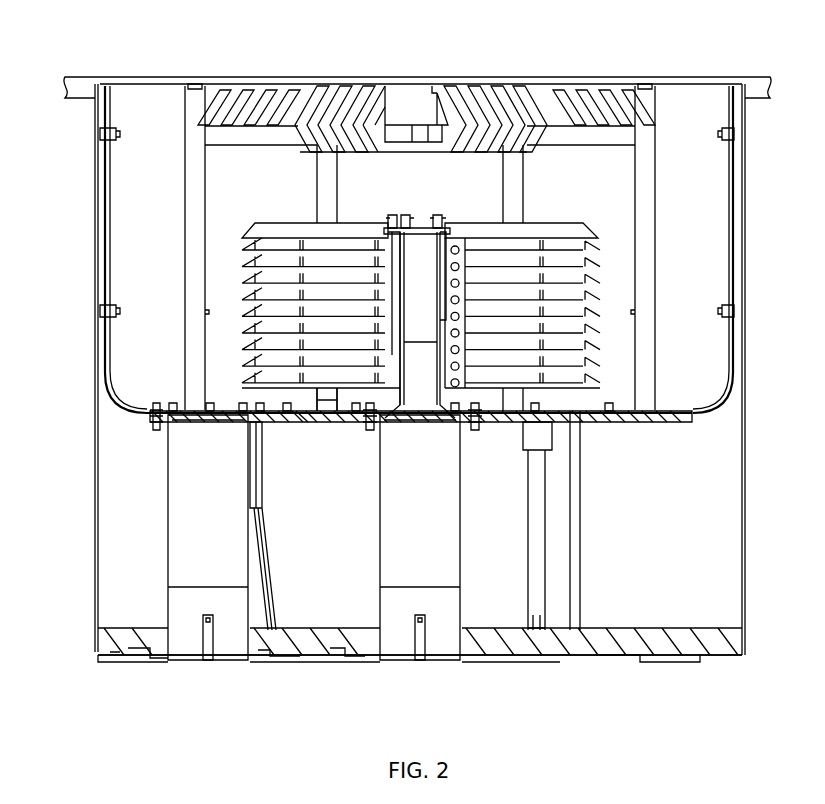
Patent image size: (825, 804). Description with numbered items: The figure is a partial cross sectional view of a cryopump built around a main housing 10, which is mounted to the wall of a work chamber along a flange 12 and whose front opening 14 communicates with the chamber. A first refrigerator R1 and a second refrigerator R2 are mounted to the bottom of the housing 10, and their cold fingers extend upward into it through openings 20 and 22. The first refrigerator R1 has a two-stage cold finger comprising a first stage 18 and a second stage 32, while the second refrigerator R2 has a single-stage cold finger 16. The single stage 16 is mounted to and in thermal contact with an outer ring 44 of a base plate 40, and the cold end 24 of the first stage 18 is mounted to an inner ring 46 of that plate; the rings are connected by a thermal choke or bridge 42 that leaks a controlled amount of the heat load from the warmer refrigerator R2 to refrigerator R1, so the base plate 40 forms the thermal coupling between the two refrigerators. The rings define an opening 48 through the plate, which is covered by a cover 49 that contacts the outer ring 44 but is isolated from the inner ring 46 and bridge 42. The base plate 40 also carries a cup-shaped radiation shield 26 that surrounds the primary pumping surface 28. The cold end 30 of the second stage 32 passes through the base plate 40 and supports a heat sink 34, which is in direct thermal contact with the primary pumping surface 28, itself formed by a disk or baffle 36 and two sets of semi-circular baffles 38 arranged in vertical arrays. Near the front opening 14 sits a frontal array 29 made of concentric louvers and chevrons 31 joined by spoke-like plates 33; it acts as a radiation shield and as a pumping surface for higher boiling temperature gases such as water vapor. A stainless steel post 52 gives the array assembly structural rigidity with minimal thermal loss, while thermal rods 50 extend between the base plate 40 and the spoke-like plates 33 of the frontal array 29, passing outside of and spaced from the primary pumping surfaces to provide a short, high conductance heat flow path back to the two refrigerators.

The main housing 10 is at (748, 567).
The flange 12 is at (756, 82).
The front opening 14 is at (685, 76).
The single-stage cold finger 16 is at (221, 510).
The first stage 18 is at (432, 510).
The opening 20 is at (160, 650).
The opening 22 is at (365, 642).
The cold end of the first stage 24 is at (370, 432).
The radiation shield 26 is at (115, 405).
The primary pumping surface 28 is at (284, 218).
The frontal array 29 is at (236, 85).
The cold end of the second stage 30 is at (410, 220).
The louvers and chevrons 31 is at (327, 88).
The second stage 32 is at (431, 300).
The spoke-like plates 33 is at (262, 138).
The heat sink 34 is at (420, 222).
The disk or baffle 36 is at (555, 222).
The semi-circular baffles 38 is at (606, 270).
The base plate 40 is at (652, 430).
The thermal choke or bridge 42 is at (506, 426).
The outer ring 44 is at (150, 420).
The inner ring 46 is at (476, 430).
The opening 48 is at (325, 420).
The cover 49 is at (298, 420).
The thermal rods 50 is at (185, 247).
The post 52 is at (580, 565).
The first refrigerator R1 is at (420, 664).
The second refrigerator R2 is at (207, 664).